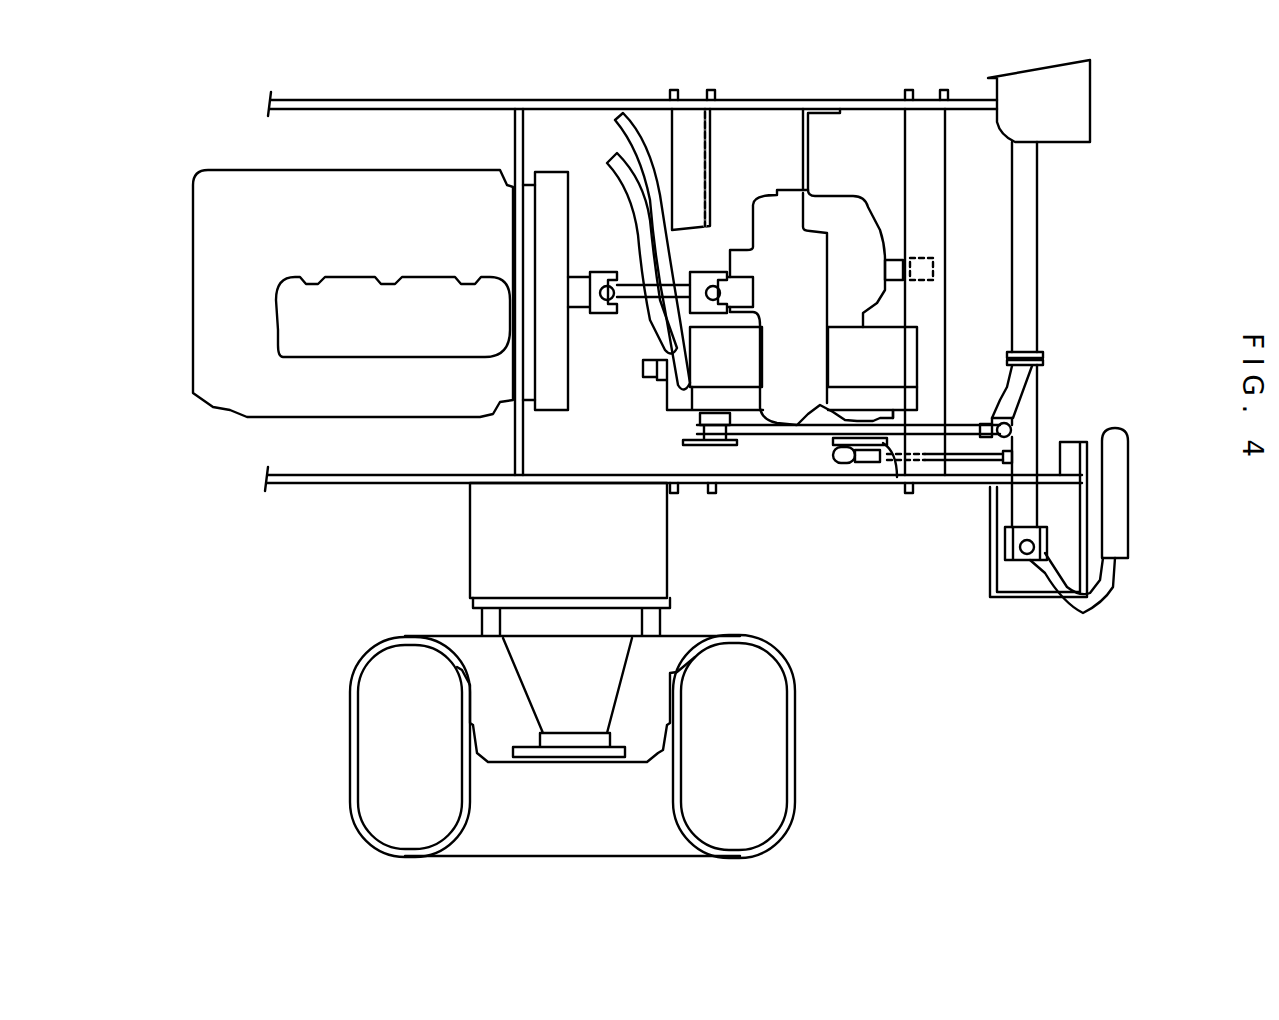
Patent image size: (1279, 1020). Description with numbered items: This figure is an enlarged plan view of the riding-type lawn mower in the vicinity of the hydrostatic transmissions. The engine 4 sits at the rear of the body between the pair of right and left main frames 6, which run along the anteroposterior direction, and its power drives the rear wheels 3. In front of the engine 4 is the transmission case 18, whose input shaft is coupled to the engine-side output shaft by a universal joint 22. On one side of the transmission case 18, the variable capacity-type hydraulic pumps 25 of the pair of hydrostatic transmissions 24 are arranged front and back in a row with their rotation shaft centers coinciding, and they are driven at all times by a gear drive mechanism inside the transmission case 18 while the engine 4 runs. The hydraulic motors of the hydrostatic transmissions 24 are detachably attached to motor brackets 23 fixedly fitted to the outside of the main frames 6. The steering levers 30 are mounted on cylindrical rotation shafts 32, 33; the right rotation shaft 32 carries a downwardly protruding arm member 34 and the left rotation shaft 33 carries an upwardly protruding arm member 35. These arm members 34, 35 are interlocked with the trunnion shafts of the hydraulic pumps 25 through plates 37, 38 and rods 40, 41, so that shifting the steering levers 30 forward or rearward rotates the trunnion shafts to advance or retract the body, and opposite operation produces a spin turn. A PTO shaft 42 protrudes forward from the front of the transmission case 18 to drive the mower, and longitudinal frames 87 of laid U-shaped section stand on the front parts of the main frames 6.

The rear wheel 3 is at (782, 668).
The engine 4 is at (390, 245).
The main frame 6 is at (867, 120).
The transmission case 18 is at (833, 203).
The universal joint 22 is at (643, 295).
The motor bracket 23 is at (470, 533).
The hydrostatic transmission 24 is at (907, 347).
The hydraulic pump 25 is at (738, 372).
The steering lever 30 is at (1128, 450).
The rotation shaft 32 is at (1037, 407).
The rotation shaft 33 is at (1030, 200).
The arm member 34 is at (1040, 440).
The arm member 35 is at (1003, 388).
The plate 37 is at (897, 488).
The plate 38 is at (697, 448).
The rod 40 is at (968, 465).
The rod 41 is at (805, 436).
The PTO shaft 42 is at (892, 257).
The longitudinal frame 87 is at (717, 93).